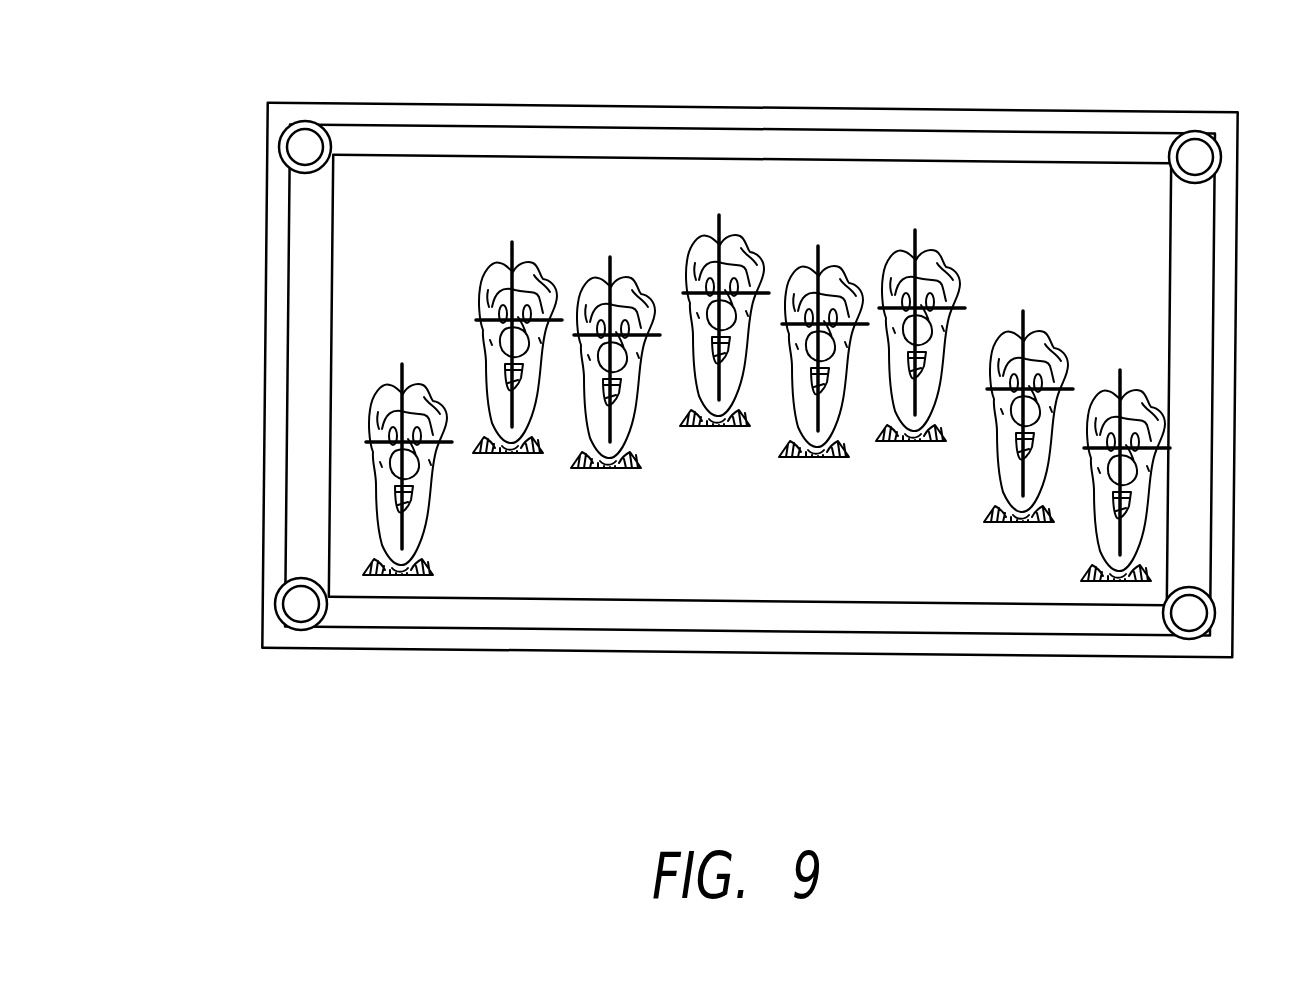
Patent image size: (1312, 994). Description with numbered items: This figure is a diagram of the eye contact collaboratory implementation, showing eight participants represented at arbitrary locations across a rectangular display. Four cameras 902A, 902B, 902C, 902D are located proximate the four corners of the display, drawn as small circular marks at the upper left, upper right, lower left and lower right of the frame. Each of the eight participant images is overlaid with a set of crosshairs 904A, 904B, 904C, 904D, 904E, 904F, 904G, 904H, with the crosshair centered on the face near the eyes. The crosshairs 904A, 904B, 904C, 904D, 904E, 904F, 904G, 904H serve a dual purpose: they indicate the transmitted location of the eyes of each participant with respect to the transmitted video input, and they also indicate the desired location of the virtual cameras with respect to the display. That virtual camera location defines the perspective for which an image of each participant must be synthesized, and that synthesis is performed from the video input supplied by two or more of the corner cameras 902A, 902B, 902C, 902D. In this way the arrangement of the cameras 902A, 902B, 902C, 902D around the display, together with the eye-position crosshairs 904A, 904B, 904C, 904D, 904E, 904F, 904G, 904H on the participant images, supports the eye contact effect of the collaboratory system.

The camera 902A is at (305, 147).
The camera 902B is at (1193, 155).
The camera 902C is at (300, 608).
The camera 902D is at (1188, 615).
The crosshairs 904A is at (385, 481).
The crosshairs 904B is at (493, 365).
The crosshairs 904C is at (592, 418).
The crosshairs 904D is at (702, 377).
The crosshairs 904E is at (798, 405).
The crosshairs 904F is at (932, 362).
The crosshairs 904G is at (1003, 473).
The crosshairs 904H is at (1098, 547).